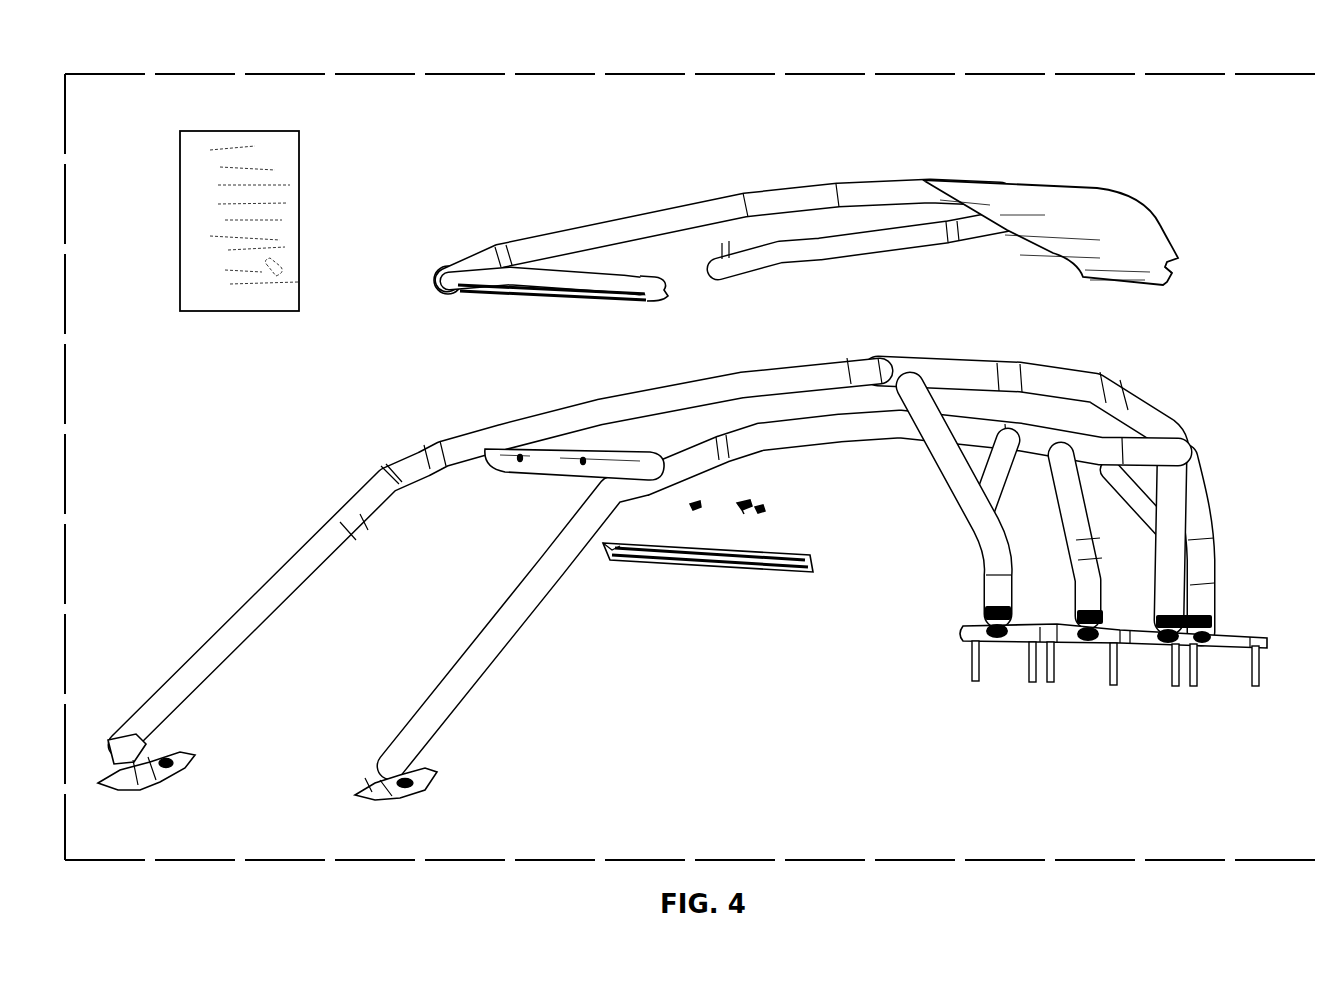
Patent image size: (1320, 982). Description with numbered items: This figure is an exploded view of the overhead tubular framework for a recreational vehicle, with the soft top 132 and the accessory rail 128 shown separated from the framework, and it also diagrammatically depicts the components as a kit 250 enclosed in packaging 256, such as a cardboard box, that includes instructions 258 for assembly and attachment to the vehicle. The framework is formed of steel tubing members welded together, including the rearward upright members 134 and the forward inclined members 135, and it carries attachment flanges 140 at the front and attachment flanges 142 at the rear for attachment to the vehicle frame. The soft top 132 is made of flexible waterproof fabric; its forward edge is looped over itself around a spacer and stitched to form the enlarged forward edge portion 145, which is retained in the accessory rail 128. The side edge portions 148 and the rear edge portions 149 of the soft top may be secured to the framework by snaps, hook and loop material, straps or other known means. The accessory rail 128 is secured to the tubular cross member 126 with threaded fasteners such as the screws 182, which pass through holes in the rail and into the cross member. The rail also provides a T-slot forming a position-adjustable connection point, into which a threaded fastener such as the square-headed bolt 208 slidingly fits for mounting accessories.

The kit 250 is at (709, 45).
The packaging 256 is at (932, 862).
The instructions 258 is at (302, 148).
The soft top 132 is at (1077, 202).
The enlarged forward edge portion 145 is at (664, 286).
The side edge portions 148 is at (863, 252).
The rear edge portions 149 is at (1148, 273).
The tubular cross member 126 is at (490, 477).
The forward inclined members 135 is at (273, 617).
The rearward upright members 134 is at (960, 513).
The attachment flanges 142 is at (1007, 650).
The attachment flanges 140 is at (187, 760).
The accessory rail 128 is at (763, 573).
The bolt 208 is at (752, 500).
The screws 182 is at (765, 510).